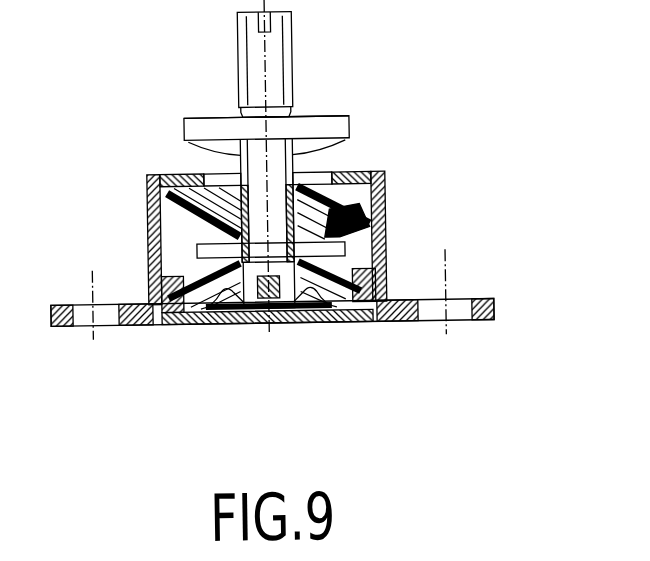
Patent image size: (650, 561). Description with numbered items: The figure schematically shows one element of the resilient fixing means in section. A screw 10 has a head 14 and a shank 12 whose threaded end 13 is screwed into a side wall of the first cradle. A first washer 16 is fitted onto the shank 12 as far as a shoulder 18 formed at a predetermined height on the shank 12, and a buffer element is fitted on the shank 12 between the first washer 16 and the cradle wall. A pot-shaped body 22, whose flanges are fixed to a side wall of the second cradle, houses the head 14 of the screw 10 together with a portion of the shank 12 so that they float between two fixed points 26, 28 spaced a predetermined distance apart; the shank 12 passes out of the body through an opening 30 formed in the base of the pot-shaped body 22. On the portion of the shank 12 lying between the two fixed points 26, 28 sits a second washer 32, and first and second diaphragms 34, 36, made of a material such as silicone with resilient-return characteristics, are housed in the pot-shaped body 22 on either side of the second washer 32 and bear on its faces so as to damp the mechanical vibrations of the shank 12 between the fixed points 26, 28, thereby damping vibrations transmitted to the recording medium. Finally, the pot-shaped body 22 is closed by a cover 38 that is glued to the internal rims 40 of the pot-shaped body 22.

The screw 10 is at (295, 78).
The threaded end 13 is at (294, 38).
The shank 12 is at (353, 147).
The first washer 16 is at (188, 120).
The shoulder 18 is at (192, 146).
The opening 30 is at (243, 166).
The pot-shaped body 22 is at (388, 231).
The fixed point 26 is at (386, 183).
The second washer 32 is at (194, 252).
The second diaphragm 36 is at (168, 219).
The head 14 is at (285, 325).
The fixed point 28 is at (168, 325).
The cover 38 is at (363, 325).
The internal rims 40 is at (386, 280).
The first diaphragm 34 is at (198, 325).